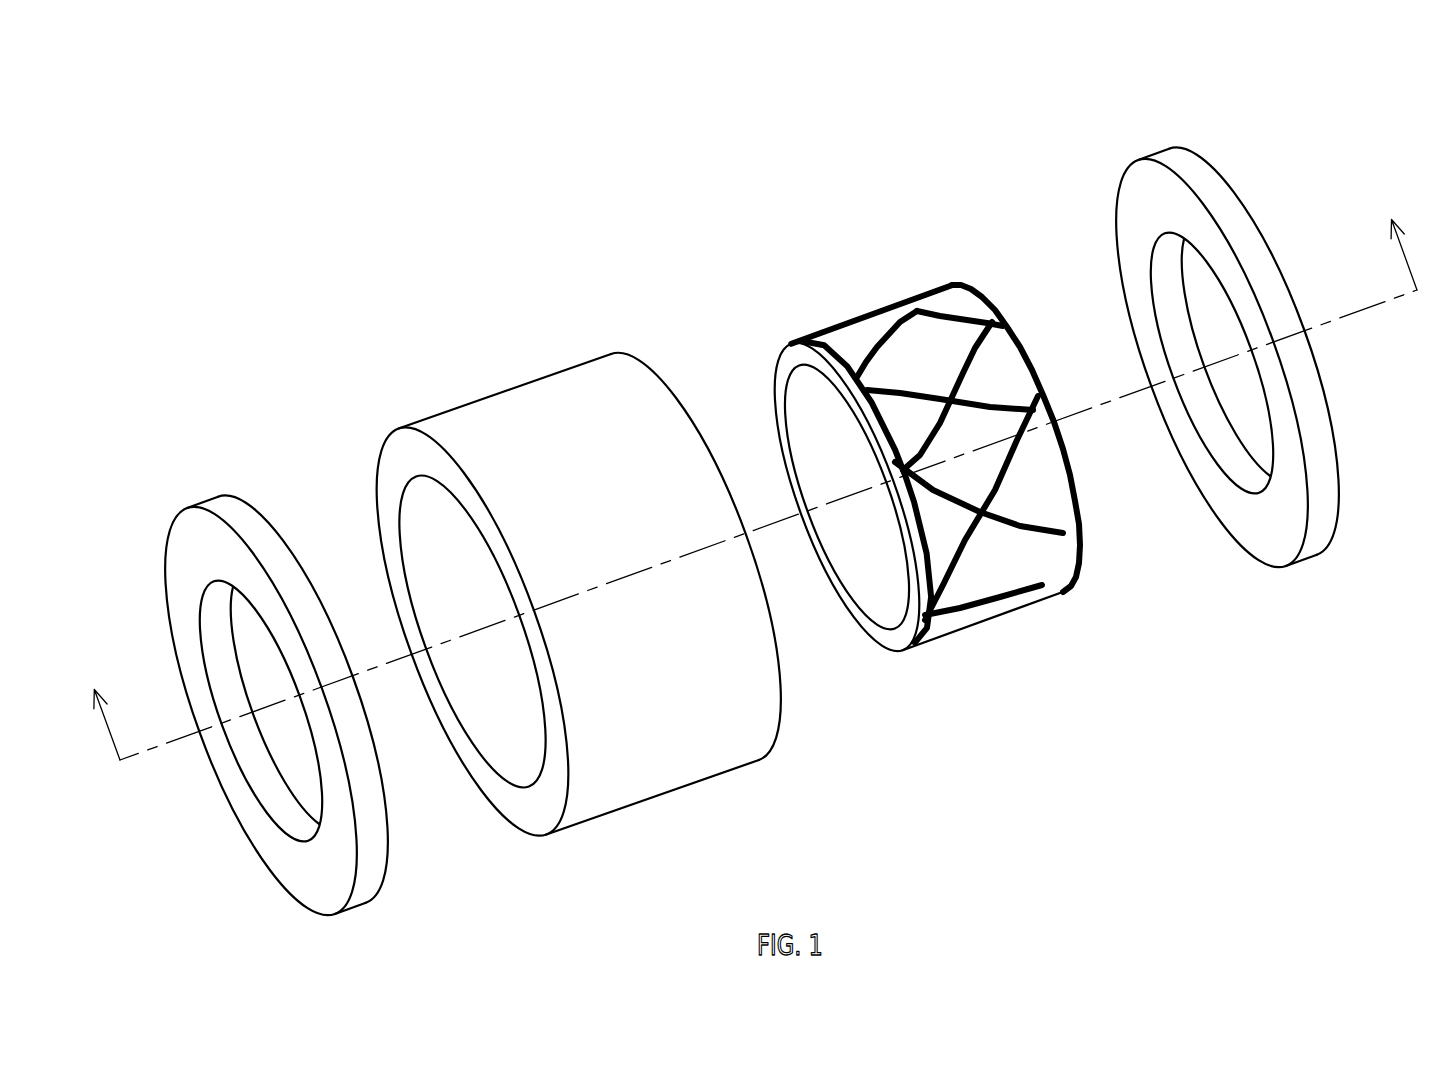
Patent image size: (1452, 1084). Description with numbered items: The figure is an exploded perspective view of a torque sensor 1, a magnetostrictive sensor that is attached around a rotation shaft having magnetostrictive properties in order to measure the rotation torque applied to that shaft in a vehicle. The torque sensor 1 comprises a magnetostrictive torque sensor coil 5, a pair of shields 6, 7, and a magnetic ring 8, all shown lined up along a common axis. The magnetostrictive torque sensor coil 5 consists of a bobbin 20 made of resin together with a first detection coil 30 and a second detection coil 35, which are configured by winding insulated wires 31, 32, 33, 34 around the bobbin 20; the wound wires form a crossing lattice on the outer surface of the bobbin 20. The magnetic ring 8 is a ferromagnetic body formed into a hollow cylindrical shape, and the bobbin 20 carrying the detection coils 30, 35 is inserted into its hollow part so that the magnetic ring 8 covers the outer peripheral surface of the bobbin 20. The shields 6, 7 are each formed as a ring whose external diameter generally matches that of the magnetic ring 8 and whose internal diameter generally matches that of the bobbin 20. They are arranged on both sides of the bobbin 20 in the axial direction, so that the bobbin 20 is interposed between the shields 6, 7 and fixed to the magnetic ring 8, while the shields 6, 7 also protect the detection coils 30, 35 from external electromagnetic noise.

The torque sensor 1 is at (680, 228).
The magnetostrictive torque sensor coil 5 is at (932, 168).
The shield 6 is at (214, 508).
The shield 7 is at (1168, 160).
The magnetic ring 8 is at (513, 405).
The bobbin 20 is at (787, 363).
The first detection coil 30 is at (930, 390).
The second detection coil 35 is at (978, 227).
The insulated wire 31 is at (925, 418).
The insulated wire 33 is at (867, 317).
The insulated wire 32 is at (965, 416).
The insulated wire 34 is at (950, 357).